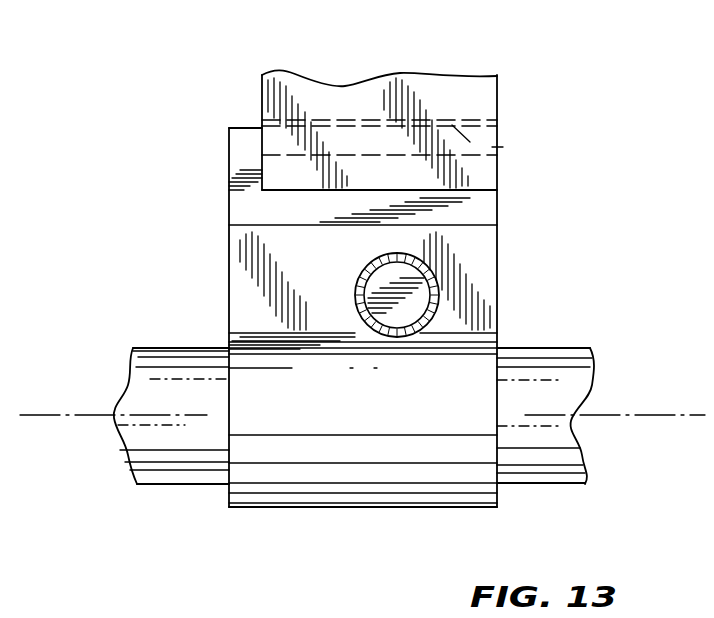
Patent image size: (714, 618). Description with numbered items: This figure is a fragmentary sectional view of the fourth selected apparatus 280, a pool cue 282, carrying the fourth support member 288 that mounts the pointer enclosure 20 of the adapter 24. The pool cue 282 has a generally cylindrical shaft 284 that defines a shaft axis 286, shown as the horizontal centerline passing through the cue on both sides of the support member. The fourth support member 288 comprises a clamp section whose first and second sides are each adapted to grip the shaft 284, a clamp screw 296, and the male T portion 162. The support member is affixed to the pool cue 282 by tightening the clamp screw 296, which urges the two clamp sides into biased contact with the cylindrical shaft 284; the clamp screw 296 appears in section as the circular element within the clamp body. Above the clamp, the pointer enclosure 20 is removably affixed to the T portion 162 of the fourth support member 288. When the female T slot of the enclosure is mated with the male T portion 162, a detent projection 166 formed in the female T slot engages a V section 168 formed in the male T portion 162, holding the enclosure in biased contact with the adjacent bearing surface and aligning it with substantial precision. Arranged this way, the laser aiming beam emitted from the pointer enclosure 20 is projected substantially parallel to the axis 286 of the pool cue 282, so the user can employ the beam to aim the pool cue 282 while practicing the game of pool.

The pointer enclosure 20 is at (262, 97).
The adapter 24 is at (255, 64).
The male T portion 162 is at (229, 178).
The detent projection 166 is at (452, 125).
The V section 168 is at (510, 147).
The fourth selected apparatus 280 is at (215, 348).
The pool cue 282 is at (138, 348).
The shaft 284 is at (520, 348).
The shaft axis 286 is at (27, 415).
The fourth support member 288 is at (499, 256).
The clamp screw 296 is at (388, 337).